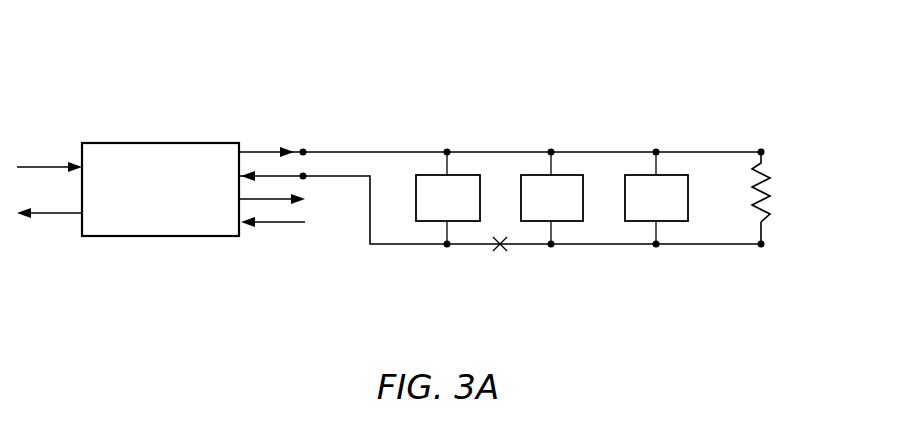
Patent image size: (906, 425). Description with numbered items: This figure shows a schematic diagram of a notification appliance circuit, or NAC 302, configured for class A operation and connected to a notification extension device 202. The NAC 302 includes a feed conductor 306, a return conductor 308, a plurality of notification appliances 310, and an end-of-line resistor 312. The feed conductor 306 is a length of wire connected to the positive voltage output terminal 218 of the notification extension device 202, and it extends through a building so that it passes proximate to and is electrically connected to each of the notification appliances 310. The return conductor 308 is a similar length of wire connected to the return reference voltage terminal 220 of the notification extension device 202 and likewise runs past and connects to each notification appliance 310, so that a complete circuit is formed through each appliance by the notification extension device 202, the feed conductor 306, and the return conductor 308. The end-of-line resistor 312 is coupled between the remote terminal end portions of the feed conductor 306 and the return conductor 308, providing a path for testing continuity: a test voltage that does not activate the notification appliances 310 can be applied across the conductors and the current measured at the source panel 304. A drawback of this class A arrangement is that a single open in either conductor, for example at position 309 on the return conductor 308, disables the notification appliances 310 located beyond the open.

The notification extension device 202 is at (137, 143).
The positive voltage output terminal 218 is at (262, 151).
The return reference voltage terminal 220 is at (272, 175).
The NAC 302 is at (574, 84).
The source panel 304 is at (400, 84).
The feed conductor 306 is at (695, 150).
The return conductor 308 is at (706, 248).
The open circuit position 309 is at (500, 252).
The notification appliance 310 is at (552, 198).
The end-of-line (EOL) resistor 312 is at (768, 185).